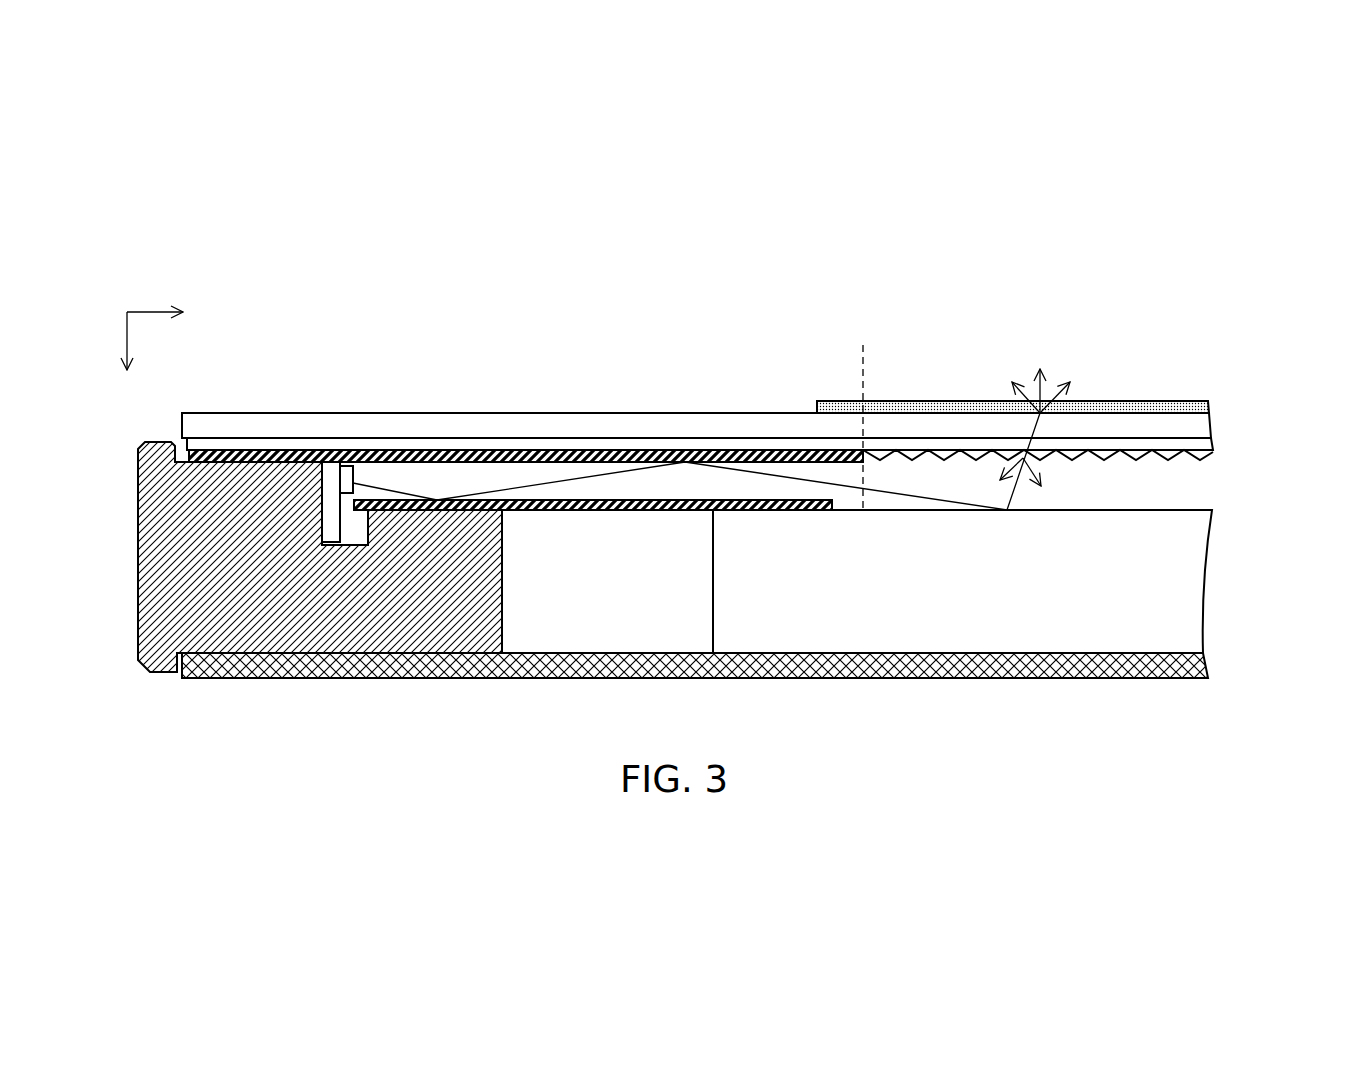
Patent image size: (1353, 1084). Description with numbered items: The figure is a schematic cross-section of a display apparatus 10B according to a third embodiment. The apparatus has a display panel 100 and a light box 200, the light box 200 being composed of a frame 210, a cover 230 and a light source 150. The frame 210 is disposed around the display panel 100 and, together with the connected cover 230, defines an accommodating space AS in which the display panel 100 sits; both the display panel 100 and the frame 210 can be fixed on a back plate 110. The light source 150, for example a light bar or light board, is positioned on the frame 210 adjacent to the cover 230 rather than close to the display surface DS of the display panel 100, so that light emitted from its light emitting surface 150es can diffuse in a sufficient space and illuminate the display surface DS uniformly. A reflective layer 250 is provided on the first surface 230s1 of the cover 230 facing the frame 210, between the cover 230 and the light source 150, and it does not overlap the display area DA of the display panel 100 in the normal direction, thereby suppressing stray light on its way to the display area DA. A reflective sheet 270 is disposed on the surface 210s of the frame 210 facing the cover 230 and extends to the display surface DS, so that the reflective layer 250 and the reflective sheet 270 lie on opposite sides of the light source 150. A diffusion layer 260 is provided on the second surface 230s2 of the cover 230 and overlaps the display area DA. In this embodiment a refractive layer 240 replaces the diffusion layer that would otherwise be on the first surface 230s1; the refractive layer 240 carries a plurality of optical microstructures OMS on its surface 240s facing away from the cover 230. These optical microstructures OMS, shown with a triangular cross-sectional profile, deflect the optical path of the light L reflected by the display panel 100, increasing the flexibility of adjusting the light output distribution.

The display apparatus 10B is at (1327, 737).
The display panel 100 is at (1175, 587).
The back plate 110 is at (1208, 663).
The light source 150 is at (340, 462).
The light emitting surface 150es is at (357, 472).
The light box 200 is at (836, 206).
The frame 210 is at (157, 539).
The surface of frame 210s is at (502, 501).
The cover 230 is at (1206, 427).
The first surface 230s1 is at (1150, 442).
The second surface 230s2 is at (721, 410).
The refractive layer 240 is at (1212, 448).
The surface of refractive layer 240s is at (1068, 457).
The reflective layer 250 is at (662, 450).
The diffusion layer 260 is at (1209, 400).
The reflective sheet 270 is at (572, 511).
The accommodating space AS is at (657, 614).
The display area DA is at (1206, 354).
The display surface DS is at (1185, 506).
The light L is at (1008, 500).
The optical microstructures OMS is at (1210, 460).